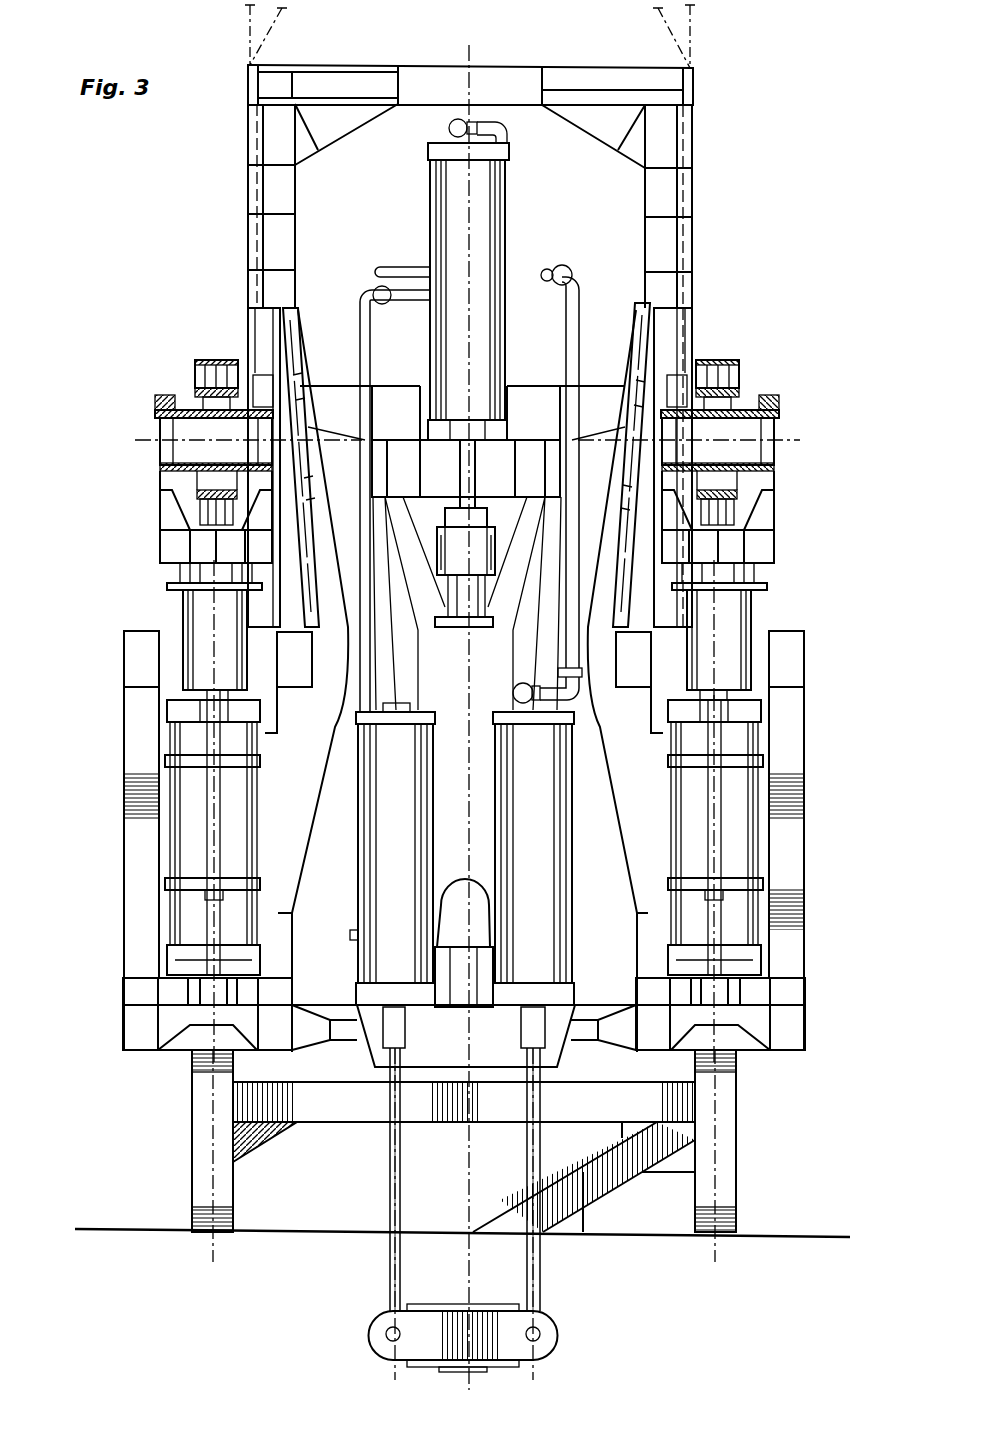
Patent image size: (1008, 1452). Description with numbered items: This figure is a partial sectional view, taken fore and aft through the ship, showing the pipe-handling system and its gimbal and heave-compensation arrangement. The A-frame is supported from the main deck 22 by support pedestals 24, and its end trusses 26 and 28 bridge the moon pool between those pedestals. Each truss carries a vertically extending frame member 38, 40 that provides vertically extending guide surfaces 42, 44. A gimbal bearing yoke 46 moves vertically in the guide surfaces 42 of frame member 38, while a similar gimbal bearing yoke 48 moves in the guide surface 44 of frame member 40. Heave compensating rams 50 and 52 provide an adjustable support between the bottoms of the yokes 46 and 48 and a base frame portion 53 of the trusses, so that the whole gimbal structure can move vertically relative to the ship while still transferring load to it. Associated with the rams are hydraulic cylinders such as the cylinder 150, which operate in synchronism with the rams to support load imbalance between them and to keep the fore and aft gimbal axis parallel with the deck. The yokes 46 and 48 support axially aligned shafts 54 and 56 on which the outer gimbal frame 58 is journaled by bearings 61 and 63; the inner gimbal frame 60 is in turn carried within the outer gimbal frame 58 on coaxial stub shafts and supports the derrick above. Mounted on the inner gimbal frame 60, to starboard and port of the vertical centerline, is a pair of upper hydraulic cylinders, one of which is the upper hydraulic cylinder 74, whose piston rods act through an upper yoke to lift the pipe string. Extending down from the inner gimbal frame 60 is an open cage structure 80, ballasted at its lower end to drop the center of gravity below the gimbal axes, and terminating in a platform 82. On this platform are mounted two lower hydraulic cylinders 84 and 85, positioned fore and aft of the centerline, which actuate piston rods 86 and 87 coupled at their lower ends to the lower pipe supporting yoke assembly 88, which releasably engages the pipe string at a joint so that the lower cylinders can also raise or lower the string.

The main deck 22 is at (772, 1233).
The support pedestals 24 is at (727, 1116).
The end truss 26 is at (806, 727).
The end truss 28 is at (123, 745).
The vertically extending frame member 38 is at (618, 470).
The vertically extending frame member 40 is at (310, 480).
The guide surfaces 42 is at (670, 335).
The guide surface 44 is at (262, 327).
The gimbal bearing yoke 46 is at (773, 520).
The gimbal bearing yoke 48 is at (160, 507).
The heave compensating ram 50 is at (754, 622).
The heave compensating ram 52 is at (180, 610).
The base frame portion 53 is at (122, 995).
The shaft 54 is at (780, 423).
The shaft 56 is at (158, 448).
The outer gimbal frame 58 is at (232, 360).
The inner gimbal frame 60 is at (597, 386).
The bearing 61 is at (737, 407).
The bearing 63 is at (205, 398).
The upper hydraulic cylinder 74 is at (508, 228).
The open cage structure 80 is at (550, 605).
The platform 82 is at (414, 1055).
The lower hydraulic cylinder 84 is at (545, 857).
The lower hydraulic cylinder 85 is at (378, 752).
The piston rod 86 is at (543, 1257).
The piston rod 87 is at (388, 1258).
The lower pipe supporting yoke assembly 88 is at (508, 1323).
The hydraulic cylinder 150 is at (717, 836).